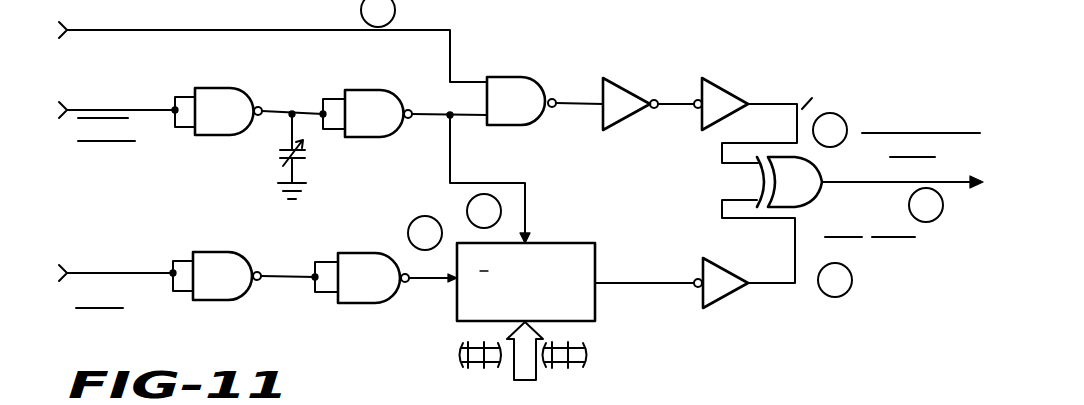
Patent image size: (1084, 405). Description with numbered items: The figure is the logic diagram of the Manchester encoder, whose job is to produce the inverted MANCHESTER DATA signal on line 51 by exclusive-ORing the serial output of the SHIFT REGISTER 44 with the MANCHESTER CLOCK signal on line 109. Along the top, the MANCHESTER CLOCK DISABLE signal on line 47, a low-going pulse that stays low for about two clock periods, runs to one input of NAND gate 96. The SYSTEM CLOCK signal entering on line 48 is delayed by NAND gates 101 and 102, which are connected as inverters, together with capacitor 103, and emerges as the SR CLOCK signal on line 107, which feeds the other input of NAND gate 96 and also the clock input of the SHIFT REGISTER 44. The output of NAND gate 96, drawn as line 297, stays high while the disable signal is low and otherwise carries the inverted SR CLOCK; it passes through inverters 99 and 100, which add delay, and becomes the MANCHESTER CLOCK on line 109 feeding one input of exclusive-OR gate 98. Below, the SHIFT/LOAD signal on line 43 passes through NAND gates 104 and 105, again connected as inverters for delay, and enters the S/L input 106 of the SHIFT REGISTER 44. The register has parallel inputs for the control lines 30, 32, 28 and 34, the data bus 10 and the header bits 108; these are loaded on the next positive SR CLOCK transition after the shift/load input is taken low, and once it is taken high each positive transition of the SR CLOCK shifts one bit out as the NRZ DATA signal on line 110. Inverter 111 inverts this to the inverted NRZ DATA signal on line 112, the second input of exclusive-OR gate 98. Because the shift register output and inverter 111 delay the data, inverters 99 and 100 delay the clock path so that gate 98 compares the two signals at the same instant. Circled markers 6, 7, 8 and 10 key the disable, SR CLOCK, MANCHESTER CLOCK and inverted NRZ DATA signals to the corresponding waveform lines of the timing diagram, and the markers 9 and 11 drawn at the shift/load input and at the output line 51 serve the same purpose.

The MANCHESTER CLOCK DISABLE line 47 is at (172, 29).
The SYSTEM CLOCK line 48 is at (130, 97).
The SHIFT/LOAD line 43 is at (127, 261).
The NAND gate 101 is at (228, 136).
The NAND gate 102 is at (383, 138).
The capacitor 103 is at (302, 161).
The NAND gate 104 is at (243, 240).
The NAND gate 105 is at (378, 240).
The S/L input 106 is at (444, 286).
The SR CLOCK line 107 is at (450, 151).
The NAND gate 96 is at (527, 63).
The line 297 is at (584, 106).
The inverter 99 is at (634, 66).
The inverter 100 is at (737, 67).
The MANCHESTER CLOCK line 109 is at (828, 118).
The exclusive-OR gate 98 is at (801, 197).
The inverted MANCHESTER DATA line 51 is at (880, 184).
The inverter 111 is at (712, 262).
The inverted NRZ DATA line 112 is at (773, 287).
The NRZ DATA line 110 is at (637, 282).
The SHIFT REGISTER 44 is at (588, 232).
The header bits 108 is at (586, 354).
The control line 30 is at (460, 346).
The control line 32 is at (381, 343).
The control line 28 is at (414, 343).
The control line 34 is at (354, 365).
The waveform line marker 6 is at (353, 30).
The waveform line marker 7 is at (524, 200).
The waveform line marker 8 is at (797, 132).
The waveform reference 9 is at (413, 276).
The data bus 10 is at (795, 284).
The waveform reference 11 is at (905, 183).